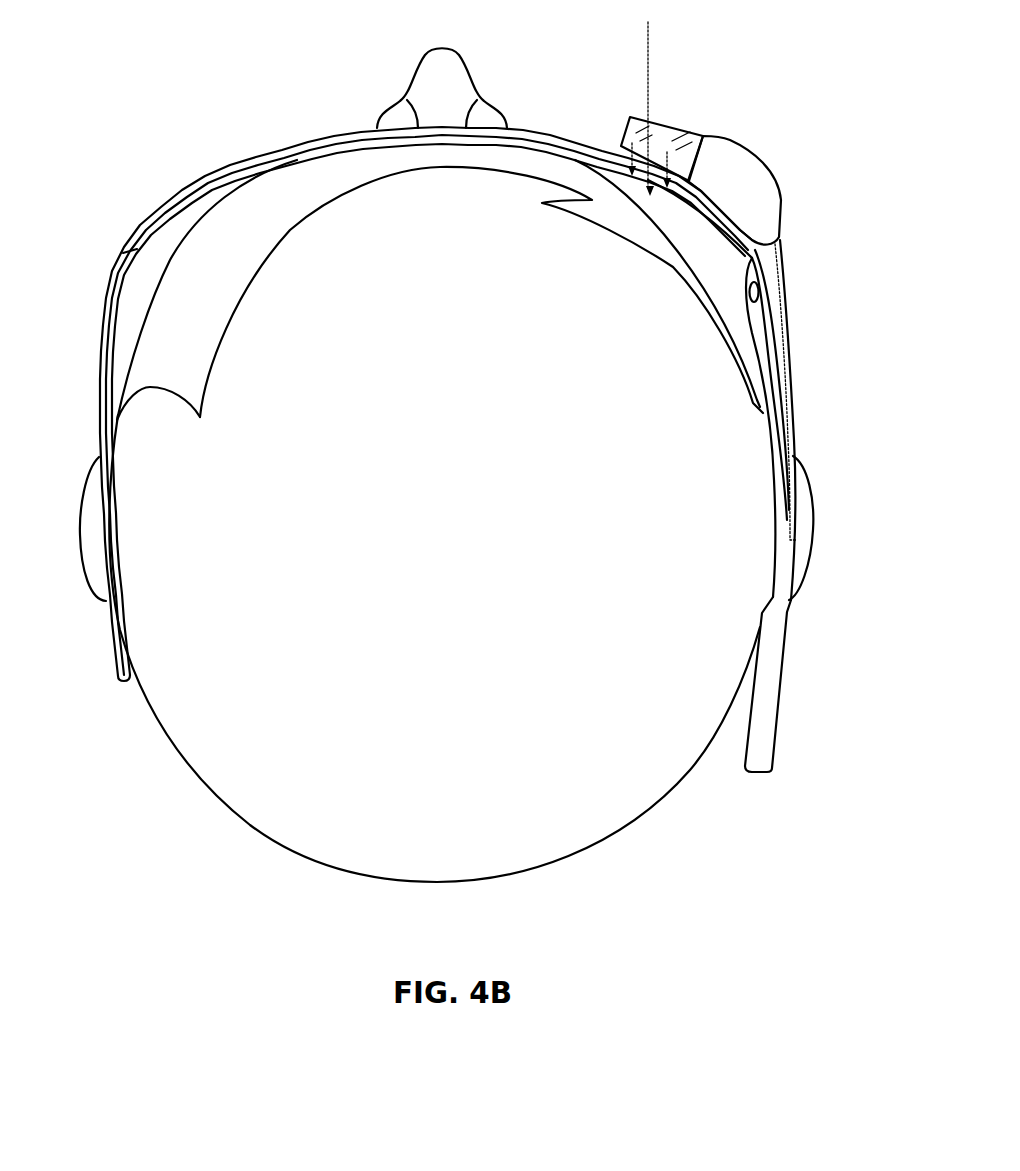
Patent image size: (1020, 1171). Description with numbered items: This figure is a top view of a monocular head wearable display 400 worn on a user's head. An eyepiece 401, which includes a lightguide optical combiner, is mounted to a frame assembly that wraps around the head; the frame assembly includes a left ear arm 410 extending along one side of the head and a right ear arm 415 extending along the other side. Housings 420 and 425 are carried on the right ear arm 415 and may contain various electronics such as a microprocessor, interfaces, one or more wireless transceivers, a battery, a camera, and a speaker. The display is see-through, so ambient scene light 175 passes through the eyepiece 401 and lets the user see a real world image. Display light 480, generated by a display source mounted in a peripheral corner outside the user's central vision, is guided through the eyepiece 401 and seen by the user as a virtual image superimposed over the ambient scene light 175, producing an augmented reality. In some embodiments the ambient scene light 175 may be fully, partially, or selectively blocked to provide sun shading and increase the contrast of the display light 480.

The head wearable display 400 is at (180, 102).
The left ear arm 410 is at (107, 338).
The right ear arm 415 is at (780, 397).
The housing 420 is at (758, 194).
The housing 425 is at (773, 690).
The eyepiece 401 is at (668, 128).
The display light 480 is at (632, 166).
The ambient scene light 175 is at (650, 63).